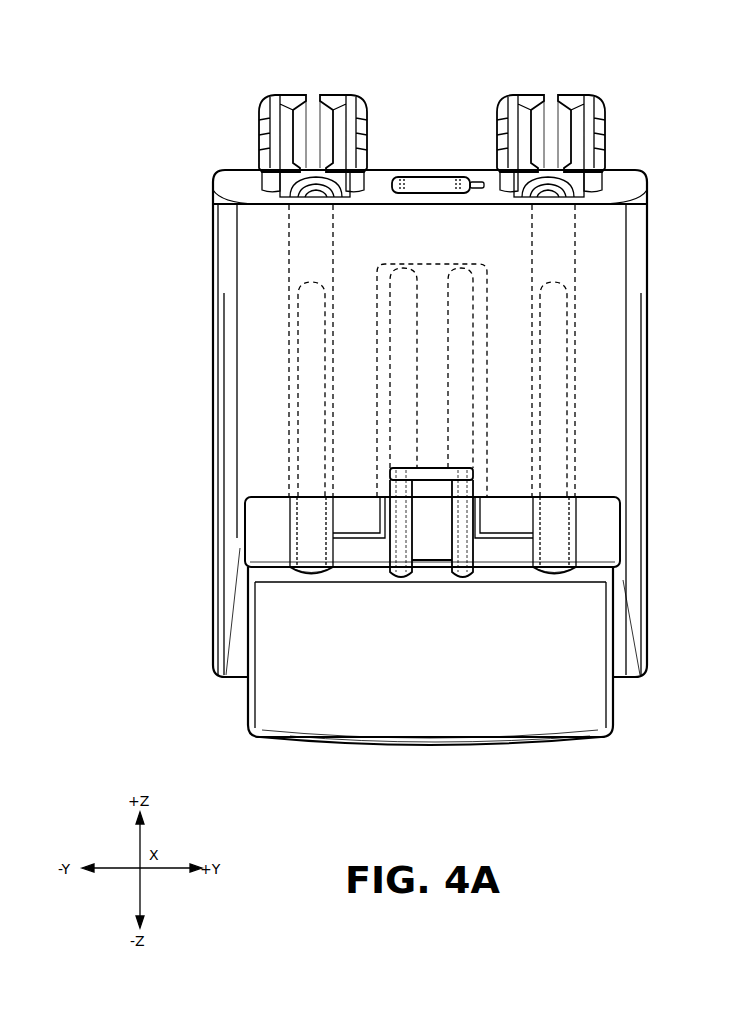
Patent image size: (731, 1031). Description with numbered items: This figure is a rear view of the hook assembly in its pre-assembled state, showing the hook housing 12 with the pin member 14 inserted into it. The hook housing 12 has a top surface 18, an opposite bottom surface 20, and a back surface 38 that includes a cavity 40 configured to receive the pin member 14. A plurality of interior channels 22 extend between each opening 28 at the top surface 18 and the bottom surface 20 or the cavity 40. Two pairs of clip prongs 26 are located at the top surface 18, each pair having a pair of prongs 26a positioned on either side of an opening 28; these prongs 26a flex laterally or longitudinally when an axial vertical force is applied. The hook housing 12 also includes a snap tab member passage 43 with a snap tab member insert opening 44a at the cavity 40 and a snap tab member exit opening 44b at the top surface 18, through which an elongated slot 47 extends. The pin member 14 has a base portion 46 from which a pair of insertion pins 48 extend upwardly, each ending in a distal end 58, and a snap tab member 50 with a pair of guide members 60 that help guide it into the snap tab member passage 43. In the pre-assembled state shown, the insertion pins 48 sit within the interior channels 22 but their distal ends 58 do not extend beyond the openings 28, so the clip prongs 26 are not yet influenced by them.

The hook housing 12 is at (158, 167).
The pin member 14 is at (270, 754).
The top surface 18 is at (630, 176).
The bottom surface 20 is at (638, 678).
The interior channels 22 is at (312, 258).
The clip prongs 26 is at (252, 106).
The prongs 26a is at (280, 94).
The opening 28 is at (333, 183).
The back surface 38 is at (499, 368).
The cavity 40 is at (598, 524).
The snap tab member passage 43 is at (430, 470).
The snap tab member insert opening 44a is at (480, 467).
The snap tab member exit opening 44b is at (428, 178).
The base portion 46 is at (578, 732).
The elongated slot 47 is at (478, 180).
The insertion pins 48 is at (312, 550).
The snap tab member 50 is at (436, 335).
The distal end 58 is at (314, 168).
The guide members 60 is at (375, 350).